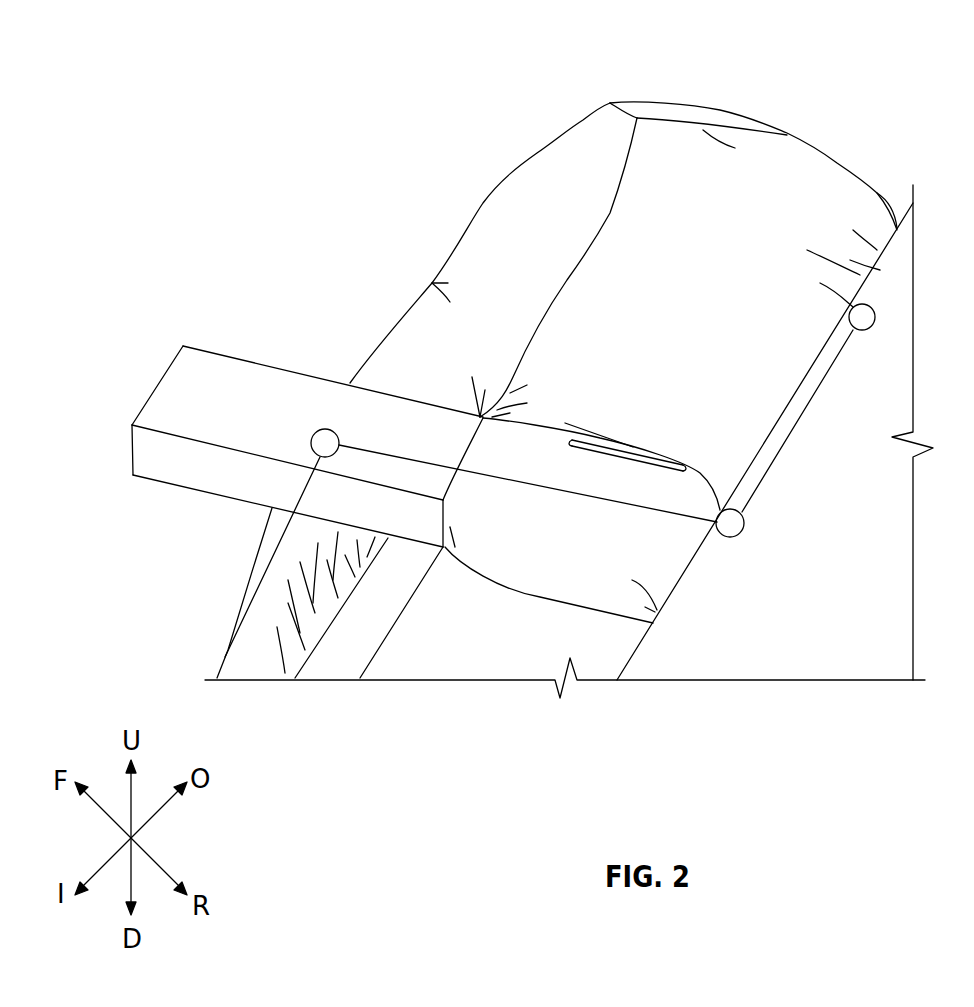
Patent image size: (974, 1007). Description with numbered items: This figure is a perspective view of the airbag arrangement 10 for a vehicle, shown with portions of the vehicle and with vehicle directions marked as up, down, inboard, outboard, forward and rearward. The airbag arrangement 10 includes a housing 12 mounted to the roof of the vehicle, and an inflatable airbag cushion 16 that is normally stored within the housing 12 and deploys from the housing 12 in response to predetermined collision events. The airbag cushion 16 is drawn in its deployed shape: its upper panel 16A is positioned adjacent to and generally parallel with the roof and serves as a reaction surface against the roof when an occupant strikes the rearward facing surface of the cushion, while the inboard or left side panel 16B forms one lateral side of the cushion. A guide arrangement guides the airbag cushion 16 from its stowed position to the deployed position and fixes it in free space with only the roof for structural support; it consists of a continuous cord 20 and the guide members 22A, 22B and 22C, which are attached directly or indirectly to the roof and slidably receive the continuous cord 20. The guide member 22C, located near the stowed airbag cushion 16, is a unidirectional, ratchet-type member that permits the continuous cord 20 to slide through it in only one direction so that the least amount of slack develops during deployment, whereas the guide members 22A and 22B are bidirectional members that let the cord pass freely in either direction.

The airbag arrangement 10 is at (377, 80).
The housing 12 is at (210, 388).
The inflatable airbag cushion 16 is at (671, 104).
The upper panel 16A is at (752, 200).
The inboard panel 16B is at (228, 655).
The continuous cord 20 is at (798, 420).
The guide member 22A is at (862, 331).
The guide member 22B is at (745, 528).
The unidirectional guide member 22C is at (323, 428).